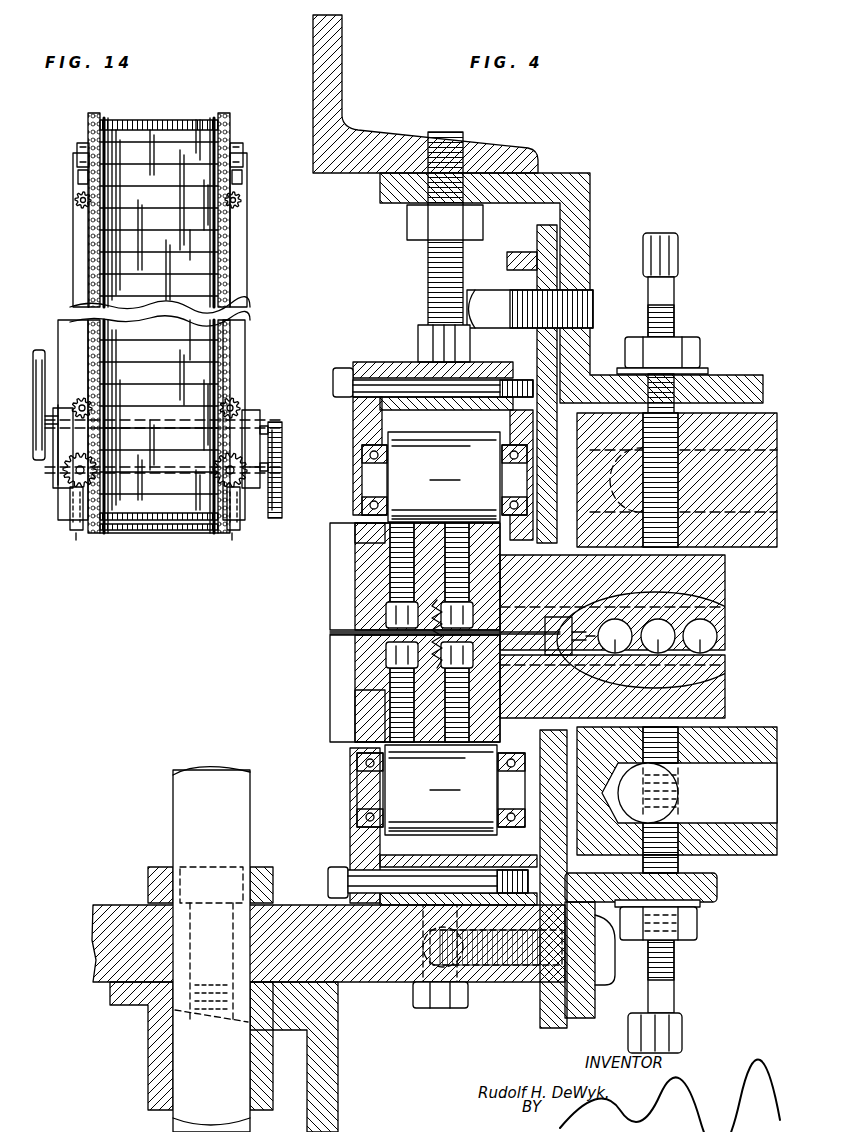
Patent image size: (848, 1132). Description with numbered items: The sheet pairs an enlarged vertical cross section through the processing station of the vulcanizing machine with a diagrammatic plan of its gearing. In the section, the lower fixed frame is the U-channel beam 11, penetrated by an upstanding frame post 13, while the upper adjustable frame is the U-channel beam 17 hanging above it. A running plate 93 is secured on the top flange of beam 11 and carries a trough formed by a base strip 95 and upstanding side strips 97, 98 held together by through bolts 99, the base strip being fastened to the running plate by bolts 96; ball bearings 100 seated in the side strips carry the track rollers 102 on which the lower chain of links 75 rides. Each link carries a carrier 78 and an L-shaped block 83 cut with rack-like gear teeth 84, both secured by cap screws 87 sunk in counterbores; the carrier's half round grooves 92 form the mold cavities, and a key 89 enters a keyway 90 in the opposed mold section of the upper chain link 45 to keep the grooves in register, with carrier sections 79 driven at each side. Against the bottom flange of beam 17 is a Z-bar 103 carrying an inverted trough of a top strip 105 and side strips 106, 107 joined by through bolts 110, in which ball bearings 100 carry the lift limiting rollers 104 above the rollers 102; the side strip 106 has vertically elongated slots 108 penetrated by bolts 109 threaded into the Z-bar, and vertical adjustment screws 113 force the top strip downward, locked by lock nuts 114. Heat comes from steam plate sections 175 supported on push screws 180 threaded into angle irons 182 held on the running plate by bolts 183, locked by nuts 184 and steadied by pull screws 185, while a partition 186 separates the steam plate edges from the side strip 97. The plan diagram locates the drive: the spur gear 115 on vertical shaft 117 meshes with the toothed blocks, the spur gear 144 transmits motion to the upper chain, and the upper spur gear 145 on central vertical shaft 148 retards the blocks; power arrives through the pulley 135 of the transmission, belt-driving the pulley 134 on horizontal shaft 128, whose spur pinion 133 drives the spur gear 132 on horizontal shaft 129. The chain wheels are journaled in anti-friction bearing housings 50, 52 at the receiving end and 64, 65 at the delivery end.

In FIG. 4, the U-channel beam 11 is at (325, 1055).
In FIG. 4, the frame post 13 is at (211, 949).
In FIG. 4, the U-channel beam 17 is at (320, 80).
In FIG. 4, the upper chain link 45 is at (372, 538).
In FIG. 14, the anti-friction bearing housing 50 is at (76, 540).
In FIG. 14, the anti-friction bearing housing 52 is at (232, 540).
In FIG. 14, the anti-friction bearing housing 64 is at (82, 143).
In FIG. 14, the anti-friction bearing housing 65 is at (240, 150).
In FIG. 4, the chain of links 75 is at (372, 712).
In FIG. 4, the carrier 78 is at (712, 580).
In FIG. 4, the carrier section 79 is at (700, 690).
In FIG. 4, the L-shaped block 83 is at (372, 560).
In FIG. 4, the gear teeth 84 is at (342, 580).
In FIG. 4, the cap screw 87 is at (390, 612).
In FIG. 4, the key 89 is at (560, 650).
In FIG. 4, the keyway 90 is at (712, 600).
In FIG. 4, the half round groove 92 is at (657, 636).
In FIG. 4, the running plate 93 is at (370, 975).
In FIG. 4, the base strip 95 is at (360, 855).
In FIG. 4, the bolt 96 is at (440, 1010).
In FIG. 4, the side strip 97 is at (515, 855).
In FIG. 4, the side strip 98 is at (360, 825).
In FIG. 4, the through bolt 99 is at (340, 875).
In FIG. 4, the ball bearing 100 is at (362, 445).
In FIG. 4, the track roller 102 is at (441, 790).
In FIG. 4, the Z-bar 103 is at (578, 205).
In FIG. 4, the lift limiting roller 104 is at (444, 477).
In FIG. 4, the top strip 105 is at (400, 362).
In FIG. 4, the side strip 106 is at (512, 420).
In FIG. 4, the side strip 107 is at (355, 415).
In FIG. 4, the vertically elongated slot 108 is at (525, 252).
In FIG. 4, the bolt 109 is at (470, 300).
In FIG. 4, the through bolt 110 is at (343, 380).
In FIG. 4, the vertical adjustment screw 113 is at (430, 325).
In FIG. 4, the lock nut 114 is at (420, 220).
In FIG. 14, the spur gear 115 is at (70, 478).
In FIG. 14, the vertical shaft 117 is at (73, 492).
In FIG. 14, the horizontal shaft 128 is at (262, 410).
In FIG. 14, the horizontal shaft 129 is at (283, 455).
In FIG. 14, the spur gear 132 is at (283, 485).
In FIG. 14, the spur pinion 133 is at (278, 422).
In FIG. 14, the pulley 134 is at (35, 440).
In FIG. 14, the pulley 135 is at (30, 358).
In FIG. 14, the spur gear 144 is at (92, 398).
In FIG. 14, the upper spur gear 145 is at (75, 204).
In FIG. 14, the central vertical shaft 148 is at (78, 185).
In FIG. 4, the steam plate section 175 is at (748, 855).
In FIG. 4, the push screw 180 is at (672, 990).
In FIG. 4, the angle iron 182 is at (705, 893).
In FIG. 4, the bolt 183 is at (605, 985).
In FIG. 4, the nut 184 is at (700, 923).
In FIG. 4, the pull screw 185 is at (676, 808).
In FIG. 4, the partition 186 is at (540, 1005).